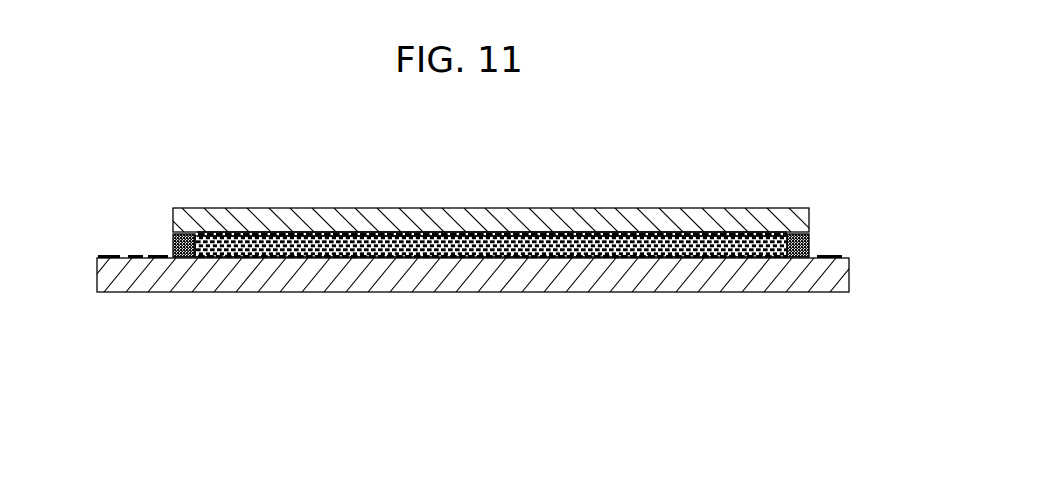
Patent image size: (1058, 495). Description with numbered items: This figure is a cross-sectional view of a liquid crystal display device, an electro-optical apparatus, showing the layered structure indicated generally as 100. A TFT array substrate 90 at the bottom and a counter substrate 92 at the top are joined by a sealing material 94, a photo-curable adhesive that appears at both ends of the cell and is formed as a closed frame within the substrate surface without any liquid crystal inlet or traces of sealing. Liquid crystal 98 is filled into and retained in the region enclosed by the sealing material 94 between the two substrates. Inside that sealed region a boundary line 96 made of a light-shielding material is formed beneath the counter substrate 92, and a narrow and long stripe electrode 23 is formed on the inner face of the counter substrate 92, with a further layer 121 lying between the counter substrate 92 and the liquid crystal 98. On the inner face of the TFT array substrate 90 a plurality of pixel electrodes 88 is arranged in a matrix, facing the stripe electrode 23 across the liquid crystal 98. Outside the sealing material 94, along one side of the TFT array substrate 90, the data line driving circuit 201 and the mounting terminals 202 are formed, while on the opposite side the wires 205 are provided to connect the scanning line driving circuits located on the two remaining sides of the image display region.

The electro-optic device 100 is at (669, 120).
The TFT array substrate 90 is at (690, 285).
The counter substrate 92 is at (617, 215).
The sealing material 94 is at (802, 243).
The boundary line 96 is at (210, 232).
The liquid crystal 98 is at (597, 240).
The alignment layer 121 is at (367, 232).
The stripe electrode 23 is at (473, 233).
The pixel electrodes 88 is at (483, 258).
The mounting terminals 202 is at (112, 257).
The data line driving circuit 201 is at (155, 257).
The wires 205 is at (822, 258).